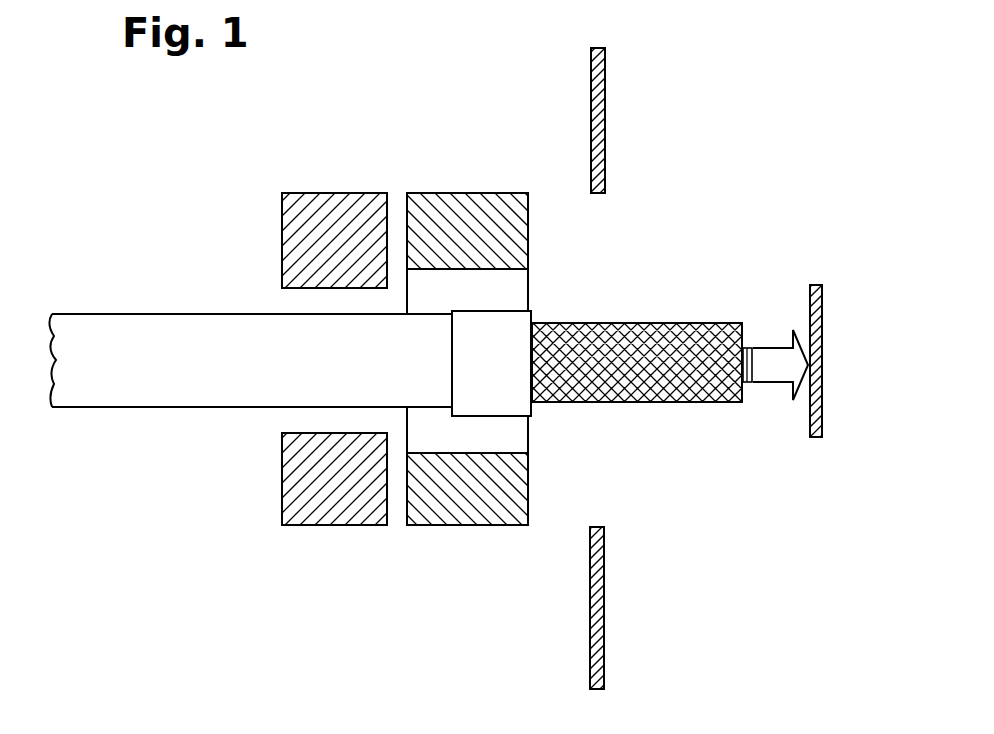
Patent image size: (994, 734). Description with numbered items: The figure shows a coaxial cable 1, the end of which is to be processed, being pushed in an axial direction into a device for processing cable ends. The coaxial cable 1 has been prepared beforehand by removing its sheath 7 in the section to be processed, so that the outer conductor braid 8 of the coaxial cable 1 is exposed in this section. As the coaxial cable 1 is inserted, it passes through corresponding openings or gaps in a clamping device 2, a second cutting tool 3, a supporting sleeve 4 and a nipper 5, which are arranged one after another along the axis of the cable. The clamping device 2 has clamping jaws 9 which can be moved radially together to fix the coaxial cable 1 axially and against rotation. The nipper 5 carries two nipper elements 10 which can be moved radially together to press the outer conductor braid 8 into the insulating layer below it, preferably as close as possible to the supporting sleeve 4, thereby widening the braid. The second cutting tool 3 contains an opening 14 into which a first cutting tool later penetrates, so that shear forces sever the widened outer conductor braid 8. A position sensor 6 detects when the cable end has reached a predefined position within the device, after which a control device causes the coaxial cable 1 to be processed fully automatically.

The coaxial cable 1 is at (87, 296).
The clamping device 2 is at (323, 182).
The second cutting tool 3 is at (447, 213).
The supporting sleeve 4 is at (503, 330).
The nipper 5 is at (578, 118).
The position sensor 6 is at (822, 307).
The sheath 7 is at (177, 375).
The outer conductor braid 8 is at (682, 328).
The clamping jaws 9 is at (305, 222).
The nipper elements 10 is at (605, 143).
The opening 14 is at (481, 435).